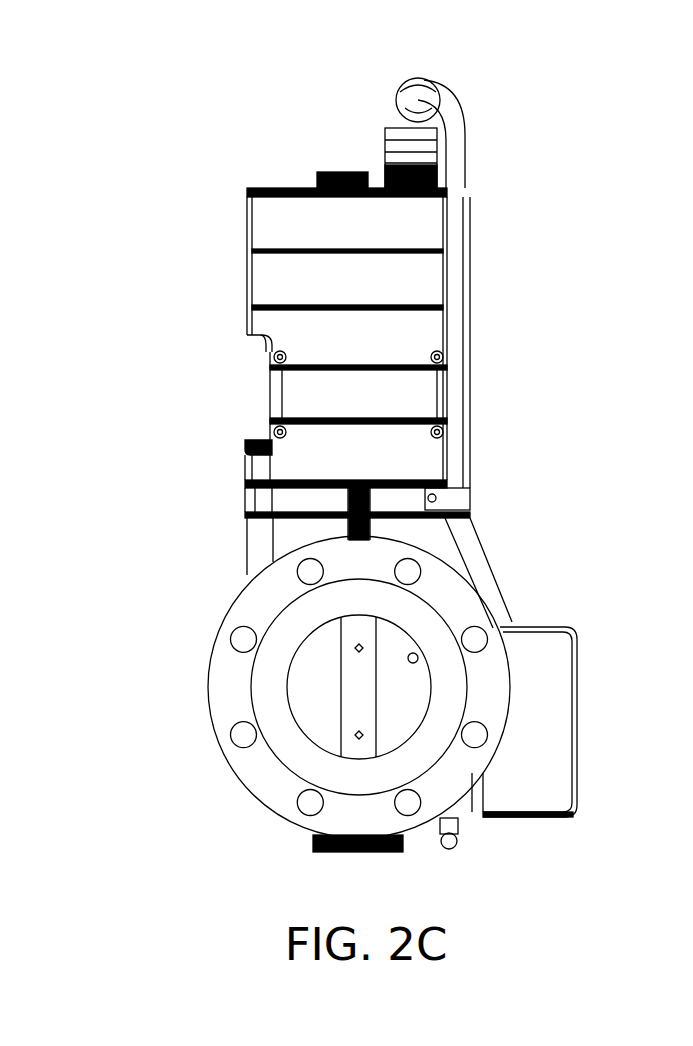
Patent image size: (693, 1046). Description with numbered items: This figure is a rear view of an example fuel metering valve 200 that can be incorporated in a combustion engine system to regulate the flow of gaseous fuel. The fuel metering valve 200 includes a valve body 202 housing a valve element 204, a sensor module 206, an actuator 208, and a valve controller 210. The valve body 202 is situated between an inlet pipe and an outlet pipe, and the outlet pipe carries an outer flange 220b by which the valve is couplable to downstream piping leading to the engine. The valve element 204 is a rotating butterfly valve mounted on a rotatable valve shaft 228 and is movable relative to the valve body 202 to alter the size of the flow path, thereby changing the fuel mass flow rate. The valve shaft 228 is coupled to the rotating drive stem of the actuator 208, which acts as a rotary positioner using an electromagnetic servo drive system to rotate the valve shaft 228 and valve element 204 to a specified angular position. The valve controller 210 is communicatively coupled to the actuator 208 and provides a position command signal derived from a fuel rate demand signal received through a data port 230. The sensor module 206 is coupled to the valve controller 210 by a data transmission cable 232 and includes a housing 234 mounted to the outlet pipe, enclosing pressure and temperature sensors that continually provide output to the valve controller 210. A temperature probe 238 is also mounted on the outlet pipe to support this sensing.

The fluid metering valve 200 is at (183, 121).
The valve body 202 is at (454, 547).
The valve element 204 is at (340, 699).
The sensor module 206 is at (579, 680).
The actuator 208 is at (252, 390).
The valve controller 210 is at (244, 243).
The outer flange 220b is at (248, 616).
The valve shaft 228 is at (367, 715).
The data port 230 is at (341, 170).
The data transmission cable 232 is at (463, 170).
The housing 234 is at (518, 749).
The temperature probe 238 is at (413, 662).